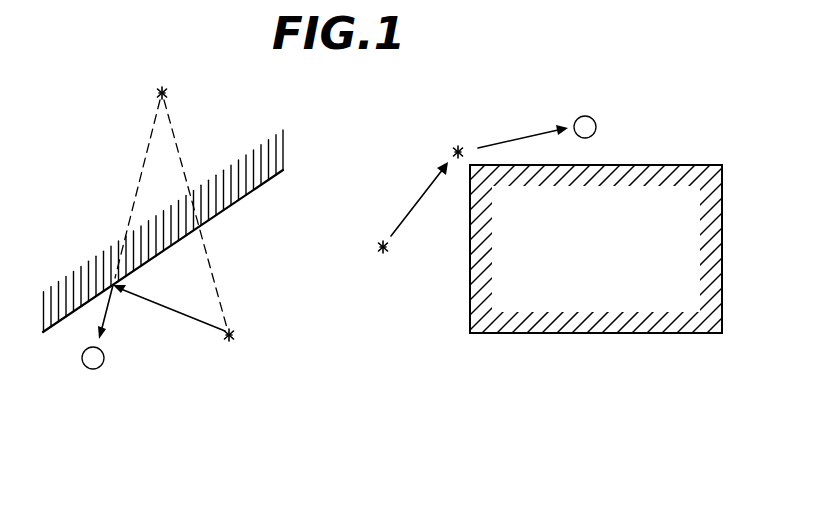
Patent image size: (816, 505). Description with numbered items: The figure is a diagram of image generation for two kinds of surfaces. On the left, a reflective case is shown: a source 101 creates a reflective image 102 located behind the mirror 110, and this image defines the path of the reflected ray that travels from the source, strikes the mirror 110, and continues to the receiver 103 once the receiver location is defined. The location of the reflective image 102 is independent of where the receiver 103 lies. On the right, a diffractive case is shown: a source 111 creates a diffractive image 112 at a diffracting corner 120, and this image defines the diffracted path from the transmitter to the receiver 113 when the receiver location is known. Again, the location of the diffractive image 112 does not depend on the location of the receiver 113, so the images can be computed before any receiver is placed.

The source 101 is at (229, 343).
The reflective image 102 is at (156, 92).
The receiver 103 is at (86, 367).
The mirror 110 is at (263, 184).
The source 111 is at (368, 251).
The diffractive image 112 is at (459, 160).
The receiver 113 is at (582, 117).
The corner 120 is at (450, 126).